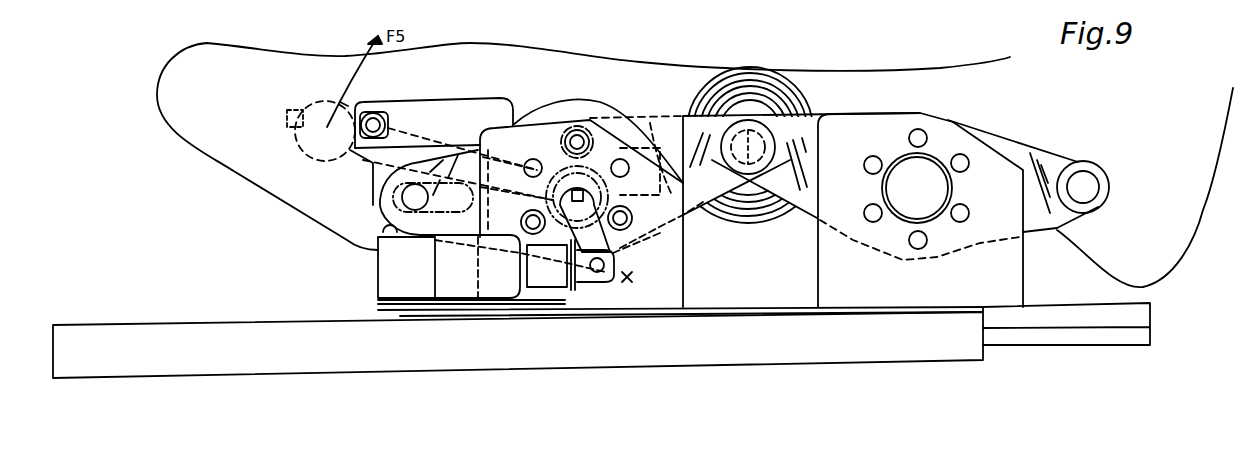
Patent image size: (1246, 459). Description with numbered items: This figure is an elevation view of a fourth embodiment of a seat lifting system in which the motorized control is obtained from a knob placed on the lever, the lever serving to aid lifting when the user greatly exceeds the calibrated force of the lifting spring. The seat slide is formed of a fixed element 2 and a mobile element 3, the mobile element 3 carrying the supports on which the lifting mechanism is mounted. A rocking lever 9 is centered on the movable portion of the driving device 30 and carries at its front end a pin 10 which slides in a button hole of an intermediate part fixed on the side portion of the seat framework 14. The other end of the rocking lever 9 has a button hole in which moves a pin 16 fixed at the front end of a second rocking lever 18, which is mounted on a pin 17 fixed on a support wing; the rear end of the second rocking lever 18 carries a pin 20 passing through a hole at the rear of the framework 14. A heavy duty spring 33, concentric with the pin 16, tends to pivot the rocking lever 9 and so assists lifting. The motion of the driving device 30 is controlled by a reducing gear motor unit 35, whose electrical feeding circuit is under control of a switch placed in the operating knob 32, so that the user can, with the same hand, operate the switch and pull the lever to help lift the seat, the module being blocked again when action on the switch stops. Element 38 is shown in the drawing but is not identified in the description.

The fixed element 2 is at (948, 355).
The mobile element 3 is at (1047, 338).
The rocking lever 9 is at (681, 117).
The pin 10 is at (405, 198).
The framework 14 is at (596, 52).
The pin 16 is at (751, 165).
The pin 17 is at (927, 167).
The second rocking lever 18 is at (1022, 148).
The pin 20 is at (1090, 177).
The driving device 30 is at (600, 106).
The knob 32 is at (299, 116).
The heavy duty spring 33 is at (767, 92).
The reducing gear motor unit 35 is at (388, 282).
The rod 38 is at (606, 256).